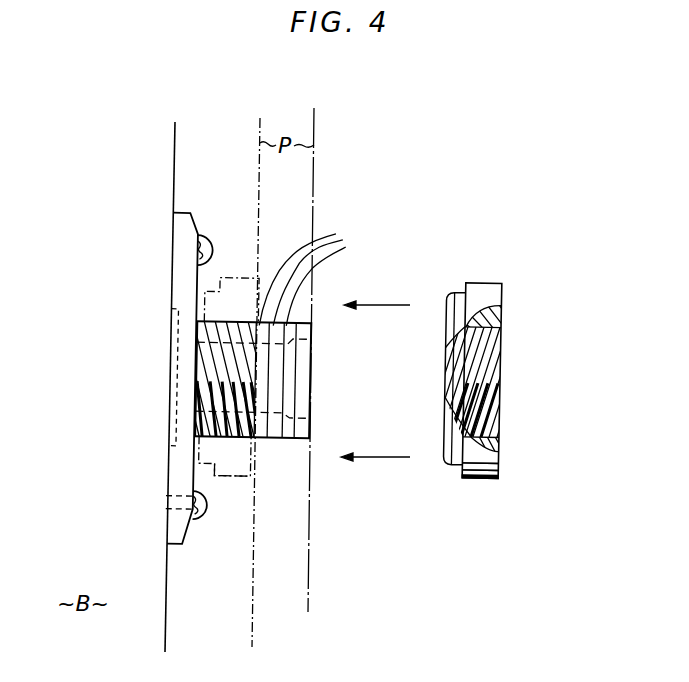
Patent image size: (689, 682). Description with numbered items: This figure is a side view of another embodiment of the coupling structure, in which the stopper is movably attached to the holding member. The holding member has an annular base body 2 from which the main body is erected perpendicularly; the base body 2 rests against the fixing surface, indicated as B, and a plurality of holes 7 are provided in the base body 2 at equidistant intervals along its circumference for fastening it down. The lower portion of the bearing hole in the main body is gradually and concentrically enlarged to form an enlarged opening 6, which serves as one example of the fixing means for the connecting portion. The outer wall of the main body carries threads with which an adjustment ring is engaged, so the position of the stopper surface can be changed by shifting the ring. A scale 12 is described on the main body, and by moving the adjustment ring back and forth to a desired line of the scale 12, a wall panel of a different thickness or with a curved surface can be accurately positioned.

The base body 2 is at (175, 462).
The enlarged opening 6 is at (193, 343).
The holes 7 is at (168, 498).
The scale 12 is at (317, 274).